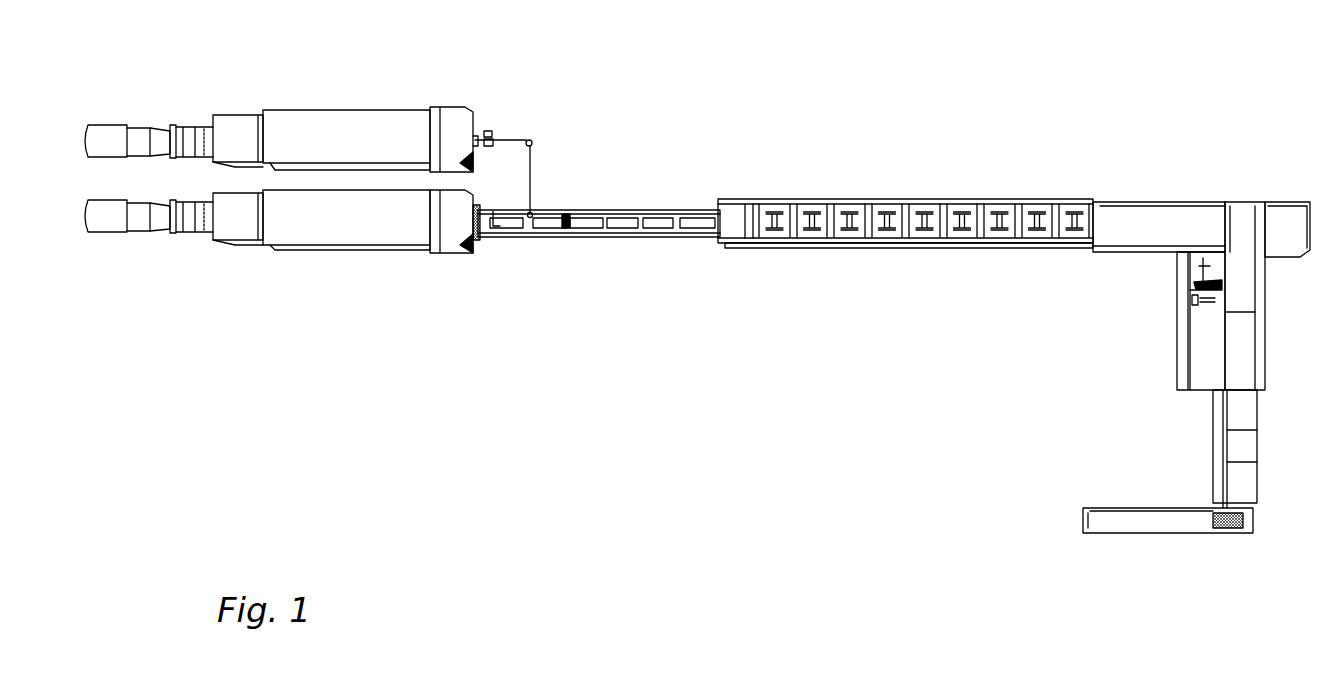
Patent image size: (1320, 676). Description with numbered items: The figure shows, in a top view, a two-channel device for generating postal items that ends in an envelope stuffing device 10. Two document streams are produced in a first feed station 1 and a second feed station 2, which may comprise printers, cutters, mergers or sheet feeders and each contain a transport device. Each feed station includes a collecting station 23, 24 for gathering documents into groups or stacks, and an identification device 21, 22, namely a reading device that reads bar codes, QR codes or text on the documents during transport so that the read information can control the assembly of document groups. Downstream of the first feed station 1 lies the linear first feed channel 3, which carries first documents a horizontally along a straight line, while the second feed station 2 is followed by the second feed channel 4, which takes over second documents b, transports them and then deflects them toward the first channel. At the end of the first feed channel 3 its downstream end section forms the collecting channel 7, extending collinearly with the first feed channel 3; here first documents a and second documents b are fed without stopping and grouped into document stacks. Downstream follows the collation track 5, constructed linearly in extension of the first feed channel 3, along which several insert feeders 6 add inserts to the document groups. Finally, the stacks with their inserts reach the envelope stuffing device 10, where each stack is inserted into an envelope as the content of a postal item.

The first feed station 1 is at (342, 262).
The second feed station 2 is at (343, 96).
The first feed channel 3 is at (596, 241).
The second feed channel 4 is at (523, 142).
The collation track 5 is at (907, 138).
The insert feeders 6 is at (771, 200).
The collecting channel 7 is at (596, 210).
The envelope stuffing device 10 is at (1270, 180).
The identification device 21 is at (237, 222).
The identification device 22 is at (237, 130).
The collecting station 23 is at (447, 228).
The collecting station 24 is at (441, 125).
The first documents a is at (494, 210).
The second documents b is at (487, 130).